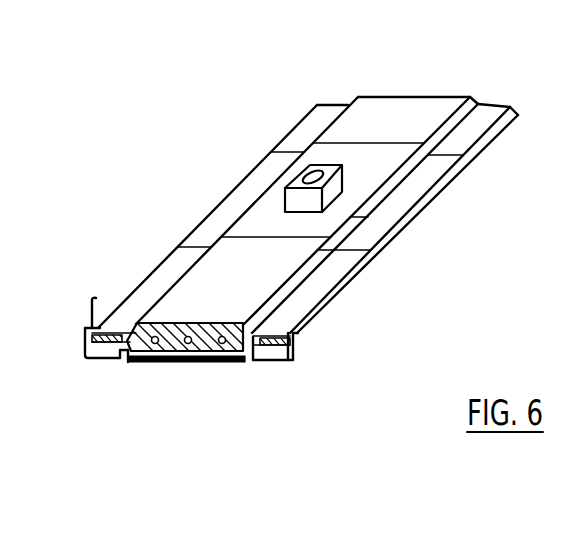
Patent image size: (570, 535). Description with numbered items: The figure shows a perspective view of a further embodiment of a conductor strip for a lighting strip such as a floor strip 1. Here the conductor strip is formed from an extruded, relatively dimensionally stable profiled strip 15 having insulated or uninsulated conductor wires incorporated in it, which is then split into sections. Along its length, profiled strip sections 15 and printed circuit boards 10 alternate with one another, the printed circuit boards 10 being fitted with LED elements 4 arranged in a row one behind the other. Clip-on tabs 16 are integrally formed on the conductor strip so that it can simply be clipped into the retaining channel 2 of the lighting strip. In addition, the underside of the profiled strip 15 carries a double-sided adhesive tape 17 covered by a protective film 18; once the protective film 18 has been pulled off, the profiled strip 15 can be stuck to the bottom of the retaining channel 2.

The floor strip 1 is at (297, 353).
The retaining channel 2 is at (100, 352).
The LED elements 4 is at (308, 199).
The printed circuit boards 10 is at (400, 162).
The profiled strip 15 is at (417, 115).
The clip-on tabs 16 is at (108, 327).
The double-sided adhesive tape 17 is at (133, 362).
The protective film 18 is at (194, 362).